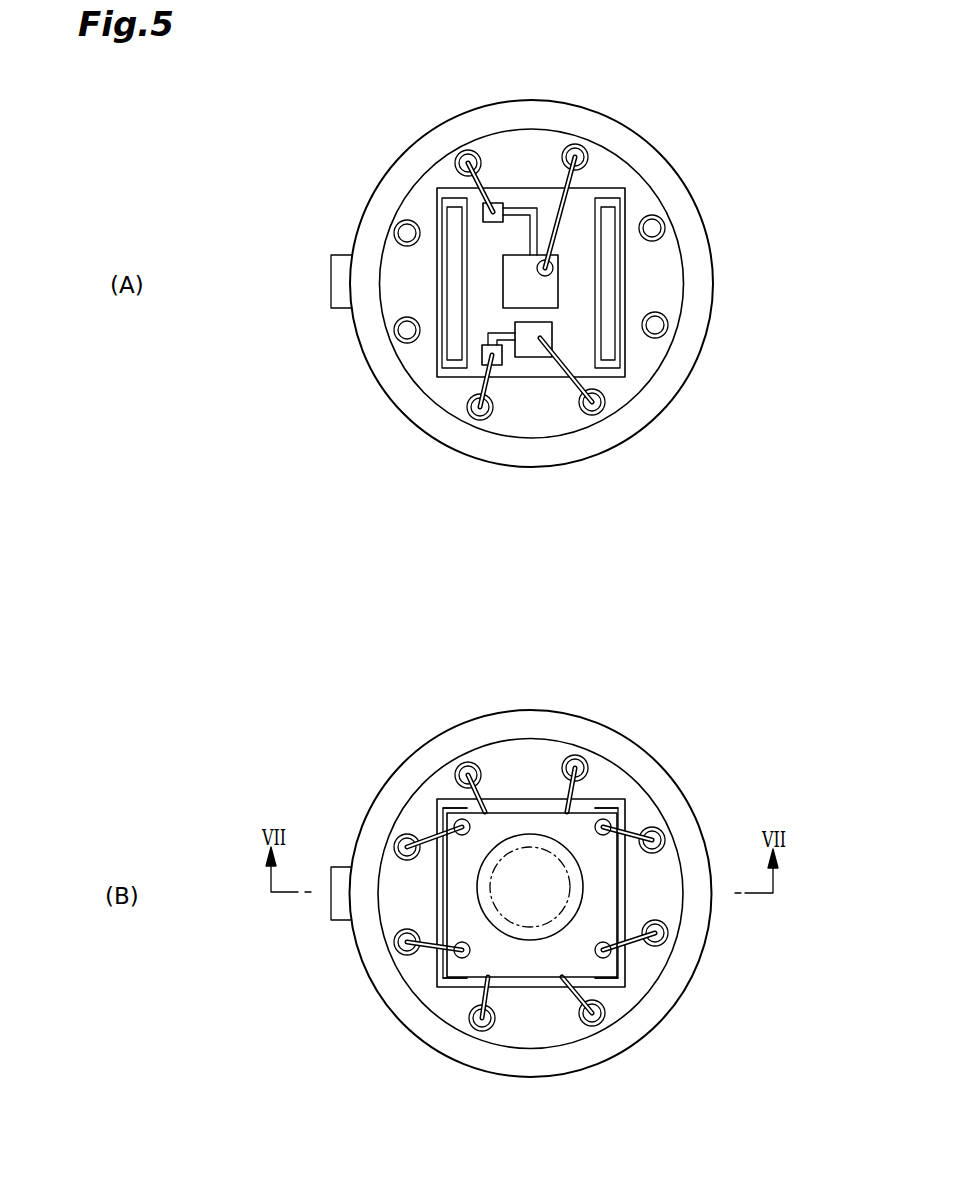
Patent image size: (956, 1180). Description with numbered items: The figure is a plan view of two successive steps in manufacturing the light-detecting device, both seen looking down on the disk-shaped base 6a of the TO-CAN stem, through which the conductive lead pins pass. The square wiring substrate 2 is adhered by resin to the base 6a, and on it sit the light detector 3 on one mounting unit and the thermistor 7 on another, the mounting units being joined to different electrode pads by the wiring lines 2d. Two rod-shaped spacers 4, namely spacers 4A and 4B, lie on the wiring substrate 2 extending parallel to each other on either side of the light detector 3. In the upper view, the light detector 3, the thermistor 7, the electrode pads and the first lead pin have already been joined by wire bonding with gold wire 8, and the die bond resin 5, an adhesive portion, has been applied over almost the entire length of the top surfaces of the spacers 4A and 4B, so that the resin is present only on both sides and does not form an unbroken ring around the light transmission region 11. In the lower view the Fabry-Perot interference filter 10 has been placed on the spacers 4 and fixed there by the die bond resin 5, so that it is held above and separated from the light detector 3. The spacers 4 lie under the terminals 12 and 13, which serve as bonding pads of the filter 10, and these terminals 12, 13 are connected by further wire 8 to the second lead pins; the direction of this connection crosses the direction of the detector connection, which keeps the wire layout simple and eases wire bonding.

The wiring substrate 2 is at (609, 190).
The wiring line 2d is at (533, 206).
The light detector 3 is at (548, 290).
The spacers 4 is at (532, 625).
The spacer 4A is at (450, 363).
The spacer 4B is at (625, 363).
The die bond resin 5 is at (450, 288).
The base 6a is at (662, 207).
The thermistor 7 is at (532, 352).
The wire 8 is at (487, 174).
The Fabry-Perot interference filter 10 is at (538, 965).
The light transmission region 11 is at (573, 890).
The terminal 12 is at (442, 808).
The terminal 13 is at (603, 820).